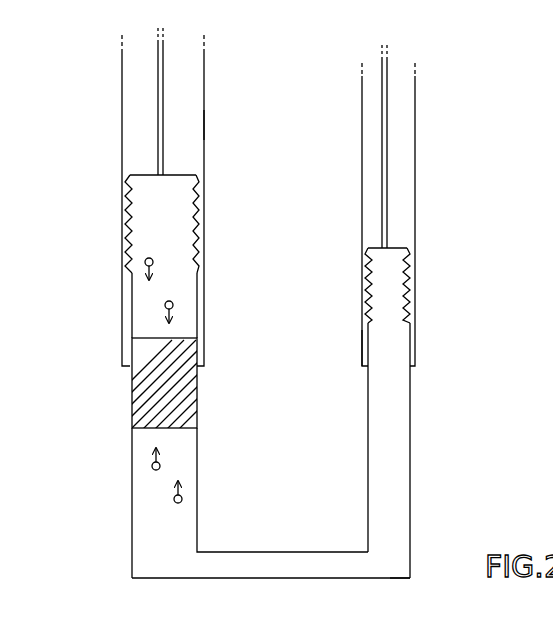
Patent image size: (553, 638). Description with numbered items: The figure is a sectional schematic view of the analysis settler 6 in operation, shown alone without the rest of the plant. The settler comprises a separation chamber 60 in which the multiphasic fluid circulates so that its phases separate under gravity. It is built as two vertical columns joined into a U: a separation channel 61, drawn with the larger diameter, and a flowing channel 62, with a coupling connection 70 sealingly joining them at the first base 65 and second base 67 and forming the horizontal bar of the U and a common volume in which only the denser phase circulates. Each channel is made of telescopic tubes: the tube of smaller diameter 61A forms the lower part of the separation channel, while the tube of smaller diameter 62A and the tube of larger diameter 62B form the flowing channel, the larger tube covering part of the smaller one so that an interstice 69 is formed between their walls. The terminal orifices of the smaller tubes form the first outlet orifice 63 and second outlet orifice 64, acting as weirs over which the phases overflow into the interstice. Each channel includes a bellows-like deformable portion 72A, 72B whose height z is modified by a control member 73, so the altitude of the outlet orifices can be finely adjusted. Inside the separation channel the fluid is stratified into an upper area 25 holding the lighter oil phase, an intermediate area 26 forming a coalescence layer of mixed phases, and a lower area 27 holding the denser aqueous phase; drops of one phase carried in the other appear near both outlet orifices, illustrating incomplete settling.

The analysis settler 6 is at (104, 50).
The upper area 25 is at (148, 296).
The intermediate area 26 is at (148, 390).
The lower area 27 is at (412, 453).
The separation chamber 60 is at (190, 96).
The separation channel 61 is at (121, 112).
The tube of smaller diameter 61A is at (205, 122).
The flowing channel 62 is at (360, 100).
The tube of smaller diameter 62A is at (365, 342).
The tube of larger diameter 62B is at (415, 178).
The first outlet orifice 63 is at (131, 173).
The second outlet orifice 64 is at (408, 247).
The first base 65 is at (135, 582).
The second base 67 is at (408, 578).
The interstice 69 is at (205, 288).
The coupling connection 70 is at (280, 565).
The deformable portion 72A is at (205, 242).
The deformable portion 72B is at (408, 283).
The control member 73 is at (166, 68).